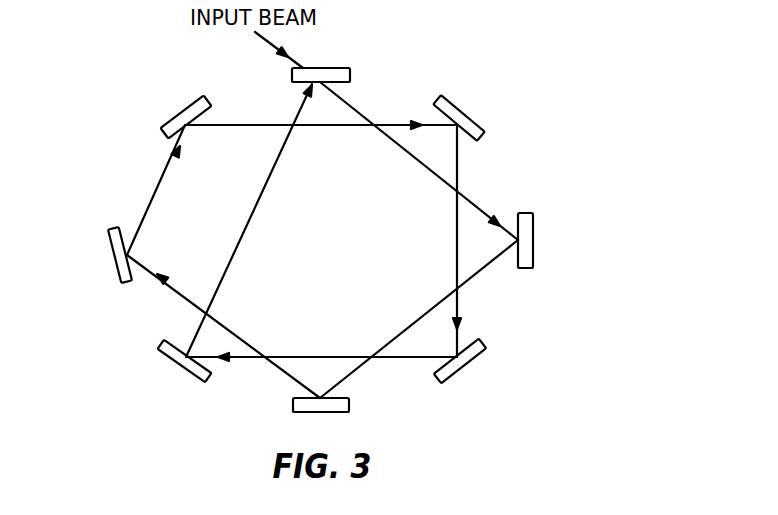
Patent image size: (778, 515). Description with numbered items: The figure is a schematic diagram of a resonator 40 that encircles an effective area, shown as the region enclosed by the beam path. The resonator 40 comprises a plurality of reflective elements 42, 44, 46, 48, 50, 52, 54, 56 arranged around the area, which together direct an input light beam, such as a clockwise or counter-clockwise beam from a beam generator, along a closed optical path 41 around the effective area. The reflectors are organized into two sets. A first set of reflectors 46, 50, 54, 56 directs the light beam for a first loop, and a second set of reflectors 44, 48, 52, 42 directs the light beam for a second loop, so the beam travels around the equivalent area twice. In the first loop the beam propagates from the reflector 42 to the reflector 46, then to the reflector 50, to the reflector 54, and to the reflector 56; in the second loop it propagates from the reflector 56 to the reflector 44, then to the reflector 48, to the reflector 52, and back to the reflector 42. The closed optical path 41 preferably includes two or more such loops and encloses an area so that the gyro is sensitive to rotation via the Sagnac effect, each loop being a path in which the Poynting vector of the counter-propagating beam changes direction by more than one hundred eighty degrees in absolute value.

The resonator 40 is at (576, 101).
The closed optical path 41 is at (148, 175).
The reflector 42 is at (350, 75).
The reflector 44 is at (468, 116).
The reflector 46 is at (535, 240).
The reflector 48 is at (458, 373).
The reflector 50 is at (349, 405).
The reflector 52 is at (188, 376).
The reflector 54 is at (108, 236).
The reflector 56 is at (176, 113).